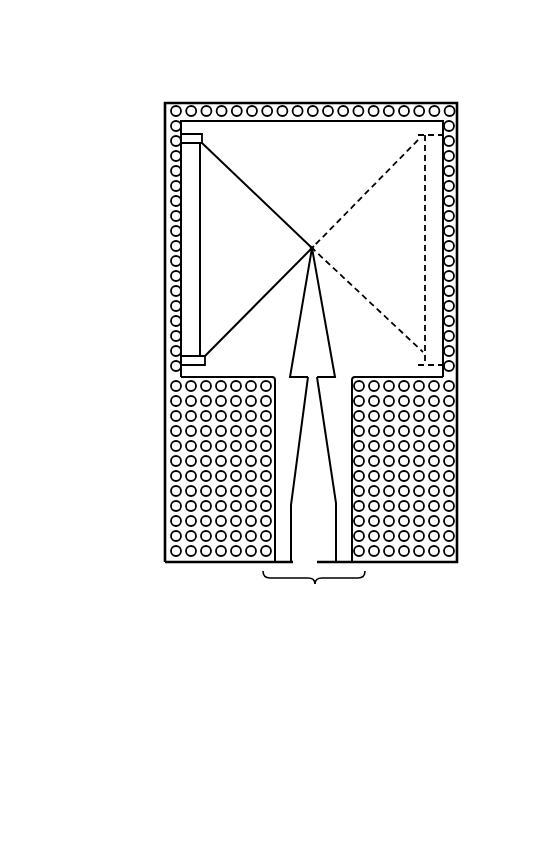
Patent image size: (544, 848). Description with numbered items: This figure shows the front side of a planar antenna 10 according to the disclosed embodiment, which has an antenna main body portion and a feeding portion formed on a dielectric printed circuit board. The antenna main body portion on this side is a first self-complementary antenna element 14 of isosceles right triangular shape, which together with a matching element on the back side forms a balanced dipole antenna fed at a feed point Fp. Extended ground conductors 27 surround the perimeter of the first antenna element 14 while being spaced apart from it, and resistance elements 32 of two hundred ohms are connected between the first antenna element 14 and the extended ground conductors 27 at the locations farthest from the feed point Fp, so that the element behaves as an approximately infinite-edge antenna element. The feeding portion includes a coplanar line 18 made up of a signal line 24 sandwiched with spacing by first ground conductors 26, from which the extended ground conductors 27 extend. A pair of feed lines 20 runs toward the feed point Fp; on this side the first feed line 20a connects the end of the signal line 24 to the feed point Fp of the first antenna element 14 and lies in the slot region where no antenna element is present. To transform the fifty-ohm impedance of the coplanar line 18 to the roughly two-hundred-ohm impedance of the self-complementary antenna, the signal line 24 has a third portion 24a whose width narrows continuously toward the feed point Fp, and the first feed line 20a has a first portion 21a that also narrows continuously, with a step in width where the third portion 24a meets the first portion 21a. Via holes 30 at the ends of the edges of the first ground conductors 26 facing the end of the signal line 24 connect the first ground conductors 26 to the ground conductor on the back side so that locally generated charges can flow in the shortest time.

The planar antenna 10 is at (415, 100).
The first self-complementary antenna element 14 is at (252, 252).
The feed point Fp is at (312, 226).
The extended ground conductors 27 is at (449, 104).
The resistance elements 32 is at (190, 134).
The first portion 21a is at (318, 327).
The first feed line 20a is at (318, 348).
The pair of feed lines 20 is at (426, 251).
The via holes 30 is at (181, 386).
The third portion 24a is at (317, 451).
The first ground conductors 26 is at (411, 516).
The signal line 24 is at (300, 517).
The coplanar line 18 is at (314, 589).